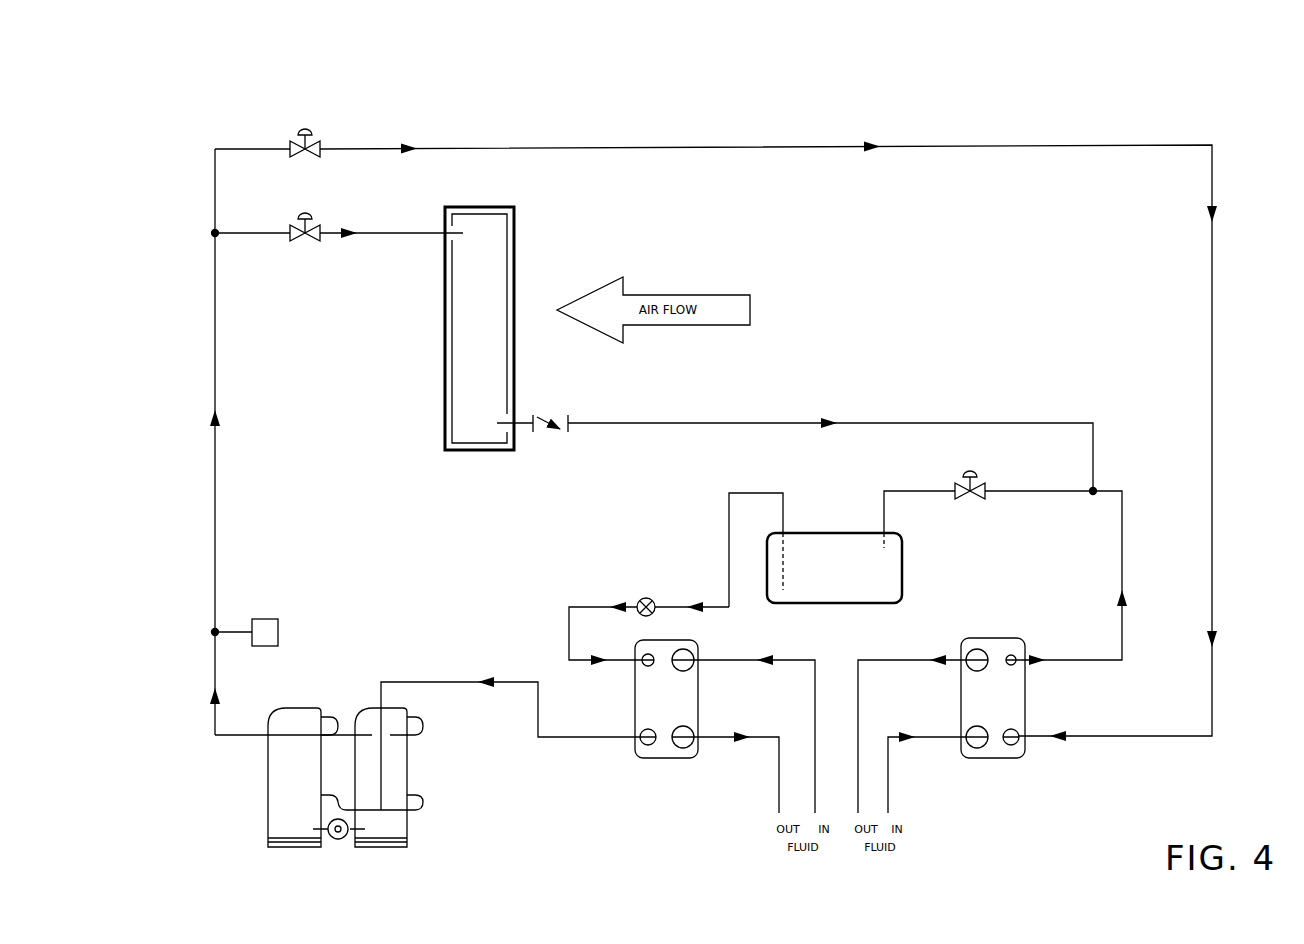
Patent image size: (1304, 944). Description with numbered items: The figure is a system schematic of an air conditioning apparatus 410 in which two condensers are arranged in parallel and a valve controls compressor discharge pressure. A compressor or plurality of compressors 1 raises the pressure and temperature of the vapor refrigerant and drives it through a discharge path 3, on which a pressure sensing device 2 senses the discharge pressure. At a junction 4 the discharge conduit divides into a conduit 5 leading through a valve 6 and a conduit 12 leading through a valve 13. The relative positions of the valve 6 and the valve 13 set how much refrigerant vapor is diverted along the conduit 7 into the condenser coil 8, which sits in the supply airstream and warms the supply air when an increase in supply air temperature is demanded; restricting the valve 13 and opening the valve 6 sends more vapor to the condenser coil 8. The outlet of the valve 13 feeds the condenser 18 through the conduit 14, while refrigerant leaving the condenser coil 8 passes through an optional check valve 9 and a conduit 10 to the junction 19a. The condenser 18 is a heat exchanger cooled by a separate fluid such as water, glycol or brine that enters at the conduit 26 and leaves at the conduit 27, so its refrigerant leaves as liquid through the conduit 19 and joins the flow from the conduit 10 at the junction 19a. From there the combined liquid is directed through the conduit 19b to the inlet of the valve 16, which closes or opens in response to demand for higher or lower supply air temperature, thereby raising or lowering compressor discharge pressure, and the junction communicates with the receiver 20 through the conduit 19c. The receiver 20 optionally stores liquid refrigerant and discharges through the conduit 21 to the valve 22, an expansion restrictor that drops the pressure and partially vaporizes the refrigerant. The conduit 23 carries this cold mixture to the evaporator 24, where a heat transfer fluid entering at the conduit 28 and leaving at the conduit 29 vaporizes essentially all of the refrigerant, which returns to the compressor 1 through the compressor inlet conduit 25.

The compressor 1 is at (291, 701).
The pressure sensing device 2 is at (269, 616).
The discharge path 3 is at (218, 373).
The junction 4 is at (212, 231).
The conduit 5 is at (244, 230).
The valve 6 is at (324, 246).
The condenser inlet pipe 7 is at (416, 230).
The condenser coil 8 is at (479, 206).
The check valve 9 is at (548, 440).
The conduit 10 is at (928, 420).
The conduit 12 is at (253, 148).
The valve 13 is at (323, 141).
The conduit 14 is at (673, 145).
The valve 16 is at (981, 505).
The condenser 18 is at (1029, 717).
The conduit 19 is at (1127, 540).
The junction 19a is at (1098, 485).
The conduit 19b is at (1010, 488).
The conduit 19c is at (910, 488).
The receiver 20 is at (836, 530).
The conduit 21 is at (757, 490).
The valve 22 is at (652, 597).
The conduit 23 is at (566, 630).
The evaporator 24 is at (701, 717).
The compressor inlet conduit 25 is at (437, 685).
The conduit 26 is at (891, 786).
The conduit 27 is at (896, 656).
The conduit 28 is at (714, 657).
The conduit 29 is at (774, 791).
The apparatus 410 is at (1201, 107).